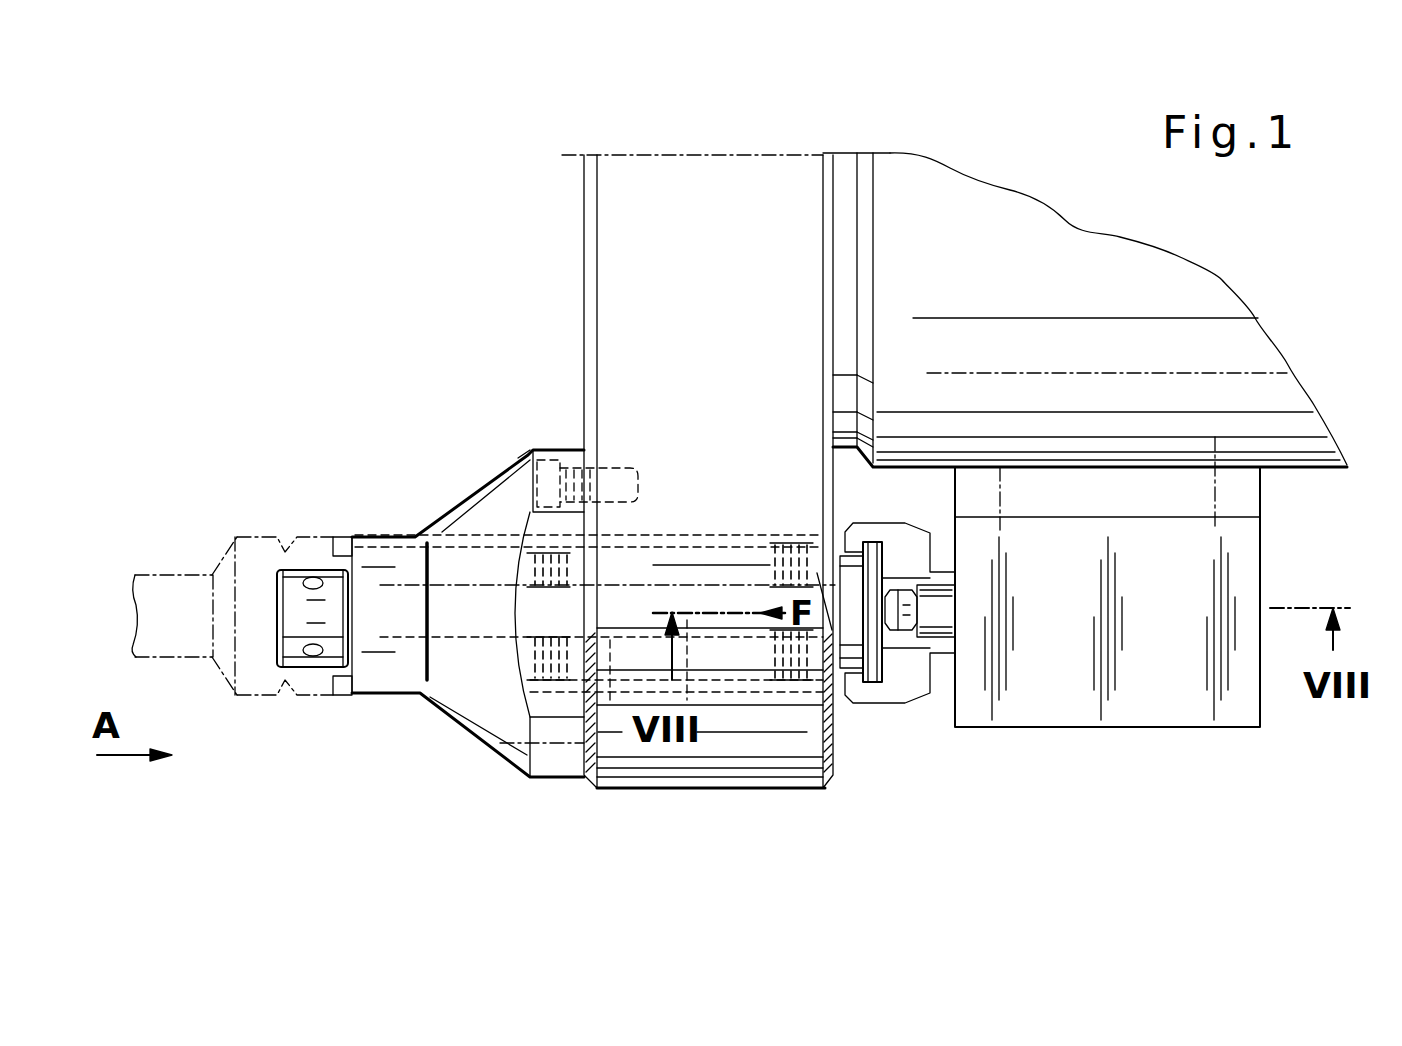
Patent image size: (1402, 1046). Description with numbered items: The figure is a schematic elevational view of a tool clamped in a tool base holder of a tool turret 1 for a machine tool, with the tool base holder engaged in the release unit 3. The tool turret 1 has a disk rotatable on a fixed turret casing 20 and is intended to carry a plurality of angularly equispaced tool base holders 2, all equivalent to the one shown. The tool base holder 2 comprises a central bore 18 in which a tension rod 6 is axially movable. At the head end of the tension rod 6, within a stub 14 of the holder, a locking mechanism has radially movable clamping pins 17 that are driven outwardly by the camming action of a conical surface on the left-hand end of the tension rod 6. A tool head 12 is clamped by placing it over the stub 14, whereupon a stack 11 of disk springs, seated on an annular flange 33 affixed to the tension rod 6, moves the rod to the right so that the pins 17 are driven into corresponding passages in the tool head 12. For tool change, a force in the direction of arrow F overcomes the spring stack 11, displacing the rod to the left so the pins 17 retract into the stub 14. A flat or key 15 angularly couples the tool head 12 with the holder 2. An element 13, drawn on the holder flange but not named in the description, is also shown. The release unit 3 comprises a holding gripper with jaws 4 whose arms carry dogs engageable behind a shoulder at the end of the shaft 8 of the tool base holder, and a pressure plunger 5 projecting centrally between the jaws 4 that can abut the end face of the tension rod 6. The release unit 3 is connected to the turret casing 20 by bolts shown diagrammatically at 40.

The tool turret 1 is at (668, 207).
The tool base holder 2 is at (488, 557).
The release unit 3 is at (1135, 775).
The jaws 4 is at (905, 770).
The pressure plunger 5 is at (905, 600).
The tension rod 6 is at (692, 817).
The shaft 8 is at (610, 817).
The stack of disk springs 11 is at (817, 817).
The tool head 12 is at (254, 780).
The bolt 13 is at (548, 455).
The stub 14 is at (318, 780).
The flat or key 15 is at (375, 780).
The clamping pins 17 is at (313, 583).
The central bore 18 is at (485, 815).
The turret casing 20 is at (1090, 310).
The annular flange 33 is at (870, 812).
The bolts 40 is at (1003, 480).